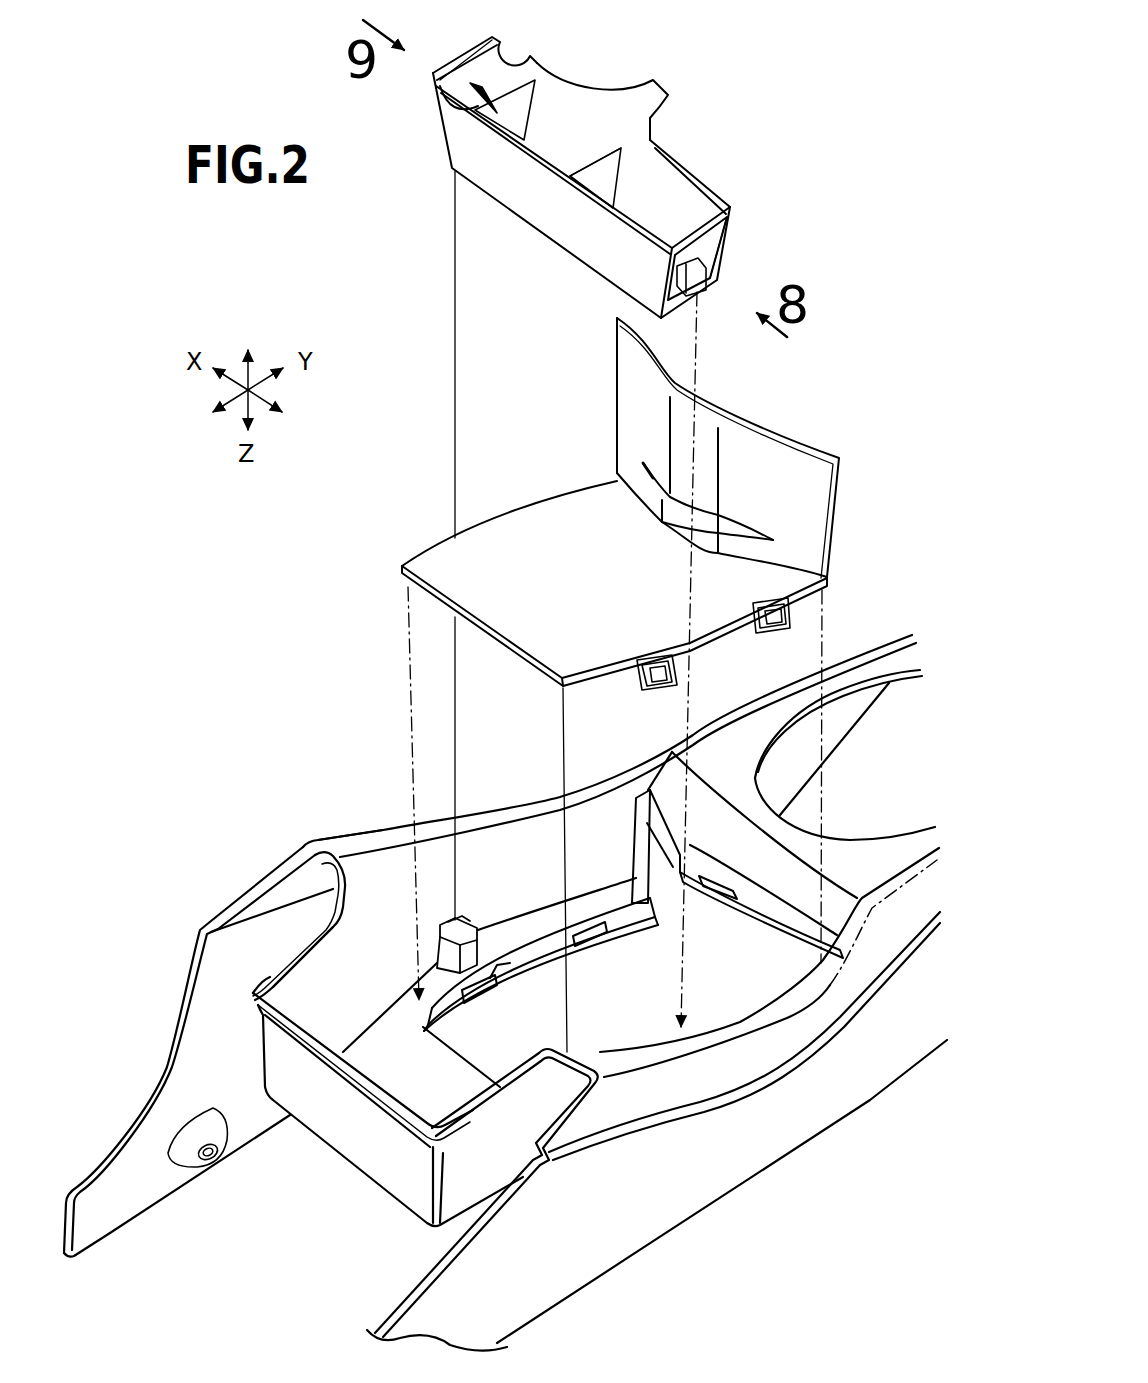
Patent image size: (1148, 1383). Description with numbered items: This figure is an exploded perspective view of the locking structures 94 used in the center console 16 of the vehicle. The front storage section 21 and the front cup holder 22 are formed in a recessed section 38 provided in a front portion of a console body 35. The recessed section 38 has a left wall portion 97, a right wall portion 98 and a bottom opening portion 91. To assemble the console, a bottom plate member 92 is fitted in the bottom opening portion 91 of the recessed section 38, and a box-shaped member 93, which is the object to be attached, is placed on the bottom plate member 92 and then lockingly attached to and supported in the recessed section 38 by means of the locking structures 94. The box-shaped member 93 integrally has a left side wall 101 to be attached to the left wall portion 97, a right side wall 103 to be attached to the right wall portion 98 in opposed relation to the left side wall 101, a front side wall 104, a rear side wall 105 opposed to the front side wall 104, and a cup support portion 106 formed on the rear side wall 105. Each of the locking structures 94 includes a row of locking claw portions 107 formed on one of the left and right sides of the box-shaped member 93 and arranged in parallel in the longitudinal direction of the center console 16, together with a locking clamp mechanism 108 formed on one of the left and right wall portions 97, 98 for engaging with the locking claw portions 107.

The center console 16 is at (268, 778).
The front storage section 21 is at (413, 1082).
The front cup holder 22 is at (817, 395).
The console body 35 is at (655, 1192).
The recessed section 38 is at (340, 855).
The bottom opening portion 91 is at (560, 880).
The bottom plate member 92 is at (436, 521).
The box-shaped member 93 is at (505, 231).
The locking structures 94 is at (421, 914).
The left wall portion 97 is at (560, 1090).
The right wall portion 98 is at (469, 857).
The left side wall 101 is at (703, 250).
The right side wall 103 is at (457, 57).
The front side wall 104 is at (573, 236).
The rear side wall 105 is at (668, 194).
The cup support portion 106 is at (667, 90).
The locking claw portions 107 is at (687, 297).
The locking clamp mechanism 108 is at (490, 948).